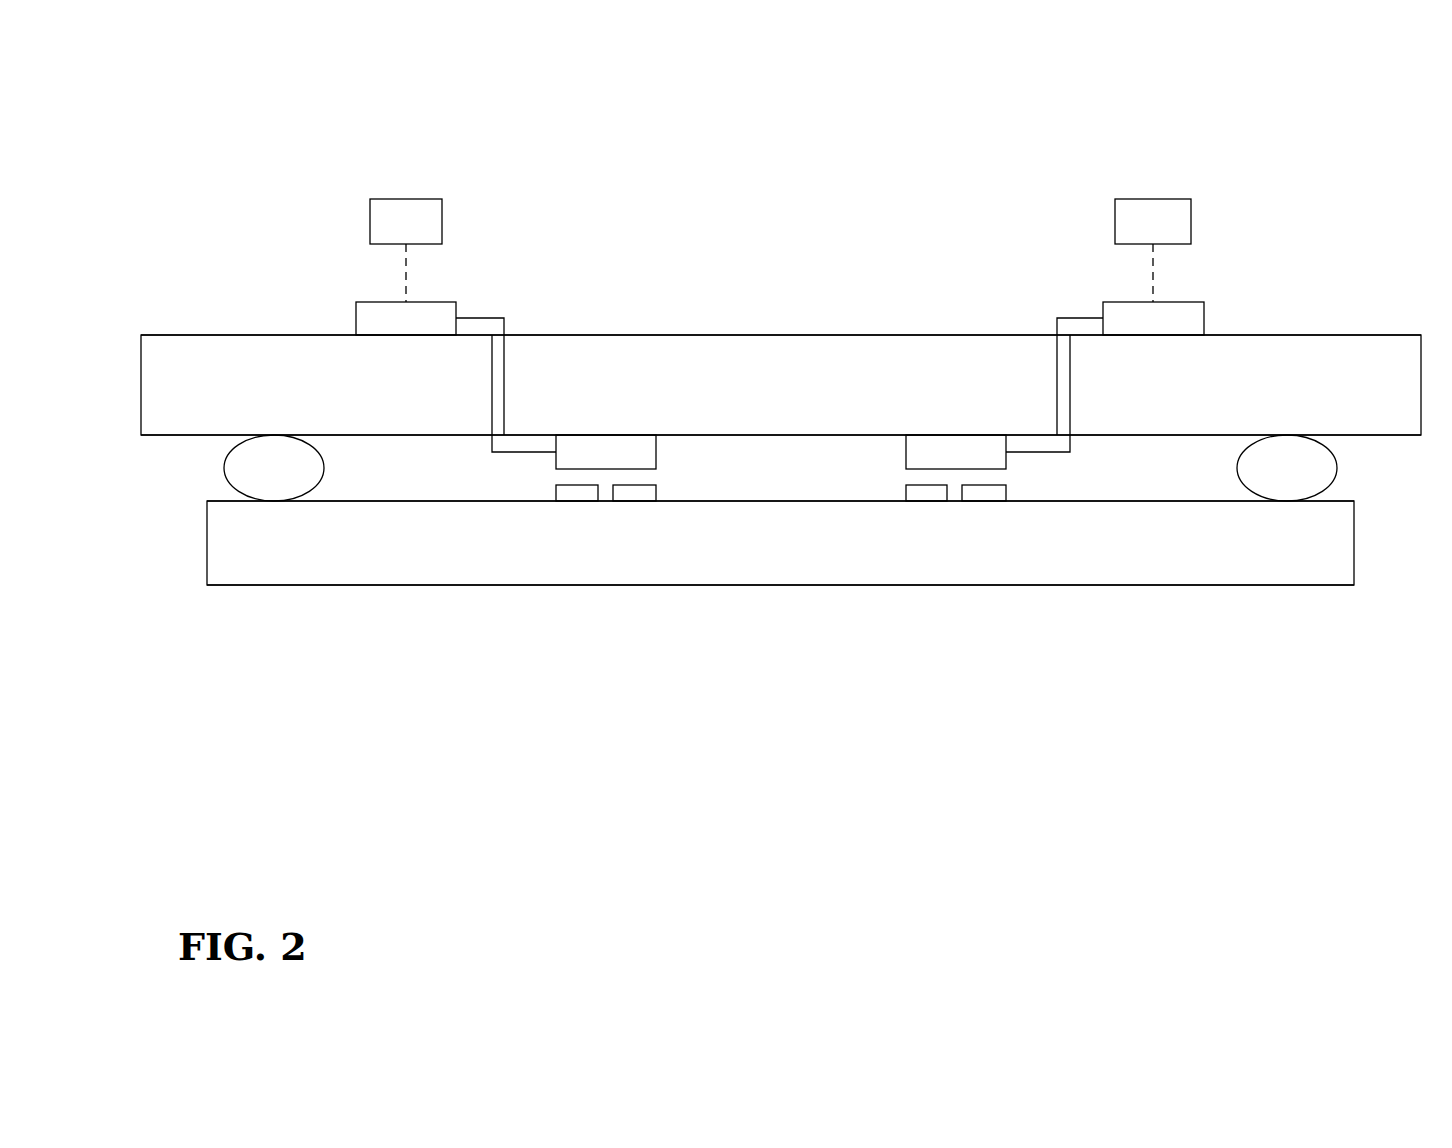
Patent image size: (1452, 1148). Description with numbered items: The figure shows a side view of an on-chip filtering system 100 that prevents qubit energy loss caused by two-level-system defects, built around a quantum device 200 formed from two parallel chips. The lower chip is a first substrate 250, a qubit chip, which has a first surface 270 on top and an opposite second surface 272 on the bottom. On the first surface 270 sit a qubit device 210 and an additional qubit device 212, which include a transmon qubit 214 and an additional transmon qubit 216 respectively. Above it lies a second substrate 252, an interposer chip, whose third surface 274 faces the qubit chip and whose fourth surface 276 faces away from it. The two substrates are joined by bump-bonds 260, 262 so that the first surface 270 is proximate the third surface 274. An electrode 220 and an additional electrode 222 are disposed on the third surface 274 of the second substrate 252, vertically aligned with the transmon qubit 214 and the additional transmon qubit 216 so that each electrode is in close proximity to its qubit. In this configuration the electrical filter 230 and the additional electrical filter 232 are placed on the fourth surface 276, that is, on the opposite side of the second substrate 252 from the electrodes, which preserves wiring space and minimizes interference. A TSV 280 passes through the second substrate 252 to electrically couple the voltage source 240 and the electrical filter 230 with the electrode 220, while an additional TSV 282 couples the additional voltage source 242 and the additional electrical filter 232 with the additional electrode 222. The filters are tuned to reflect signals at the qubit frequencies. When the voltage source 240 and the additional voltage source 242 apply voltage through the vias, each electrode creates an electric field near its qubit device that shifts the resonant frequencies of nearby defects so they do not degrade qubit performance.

The on-chip filtering system 100 is at (405, 72).
The quantum device 200 is at (583, 130).
The qubit device 210 is at (588, 532).
The additional qubit device 212 is at (957, 534).
The transmon qubit 214 is at (656, 493).
The additional transmon qubit 216 is at (906, 493).
The electrode 220 is at (656, 452).
The additional electrode 222 is at (906, 452).
The electrical filter 230 is at (406, 318).
The additional electrical filter 232 is at (1153, 318).
The voltage source 240 is at (406, 250).
The additional voltage source 242 is at (1153, 250).
The first substrate 250 is at (780, 543).
The second substrate 252 is at (781, 385).
The bump-bond 260 is at (224, 470).
The bump-bond 262 is at (1336, 468).
The first surface 270 is at (780, 501).
The second surface 272 is at (902, 585).
The third surface 274 is at (783, 435).
The fourth surface 276 is at (923, 335).
The TSV 280 is at (476, 399).
The additional TSV 282 is at (1084, 384).